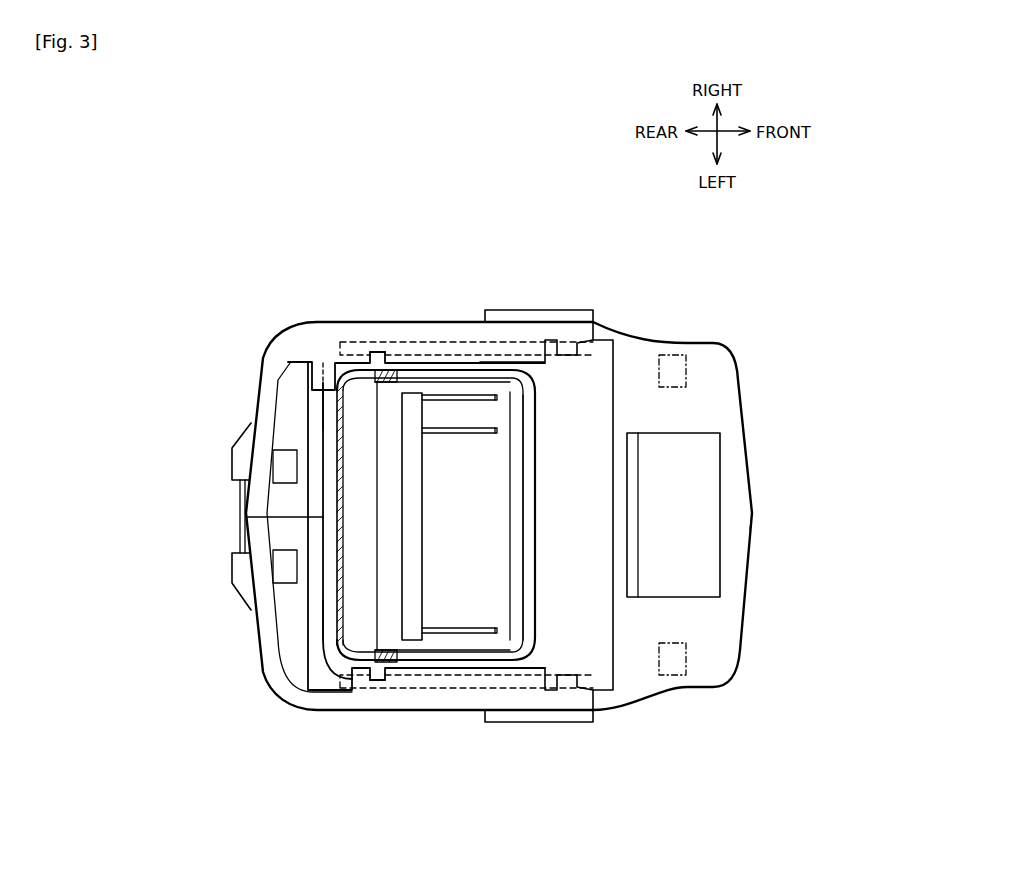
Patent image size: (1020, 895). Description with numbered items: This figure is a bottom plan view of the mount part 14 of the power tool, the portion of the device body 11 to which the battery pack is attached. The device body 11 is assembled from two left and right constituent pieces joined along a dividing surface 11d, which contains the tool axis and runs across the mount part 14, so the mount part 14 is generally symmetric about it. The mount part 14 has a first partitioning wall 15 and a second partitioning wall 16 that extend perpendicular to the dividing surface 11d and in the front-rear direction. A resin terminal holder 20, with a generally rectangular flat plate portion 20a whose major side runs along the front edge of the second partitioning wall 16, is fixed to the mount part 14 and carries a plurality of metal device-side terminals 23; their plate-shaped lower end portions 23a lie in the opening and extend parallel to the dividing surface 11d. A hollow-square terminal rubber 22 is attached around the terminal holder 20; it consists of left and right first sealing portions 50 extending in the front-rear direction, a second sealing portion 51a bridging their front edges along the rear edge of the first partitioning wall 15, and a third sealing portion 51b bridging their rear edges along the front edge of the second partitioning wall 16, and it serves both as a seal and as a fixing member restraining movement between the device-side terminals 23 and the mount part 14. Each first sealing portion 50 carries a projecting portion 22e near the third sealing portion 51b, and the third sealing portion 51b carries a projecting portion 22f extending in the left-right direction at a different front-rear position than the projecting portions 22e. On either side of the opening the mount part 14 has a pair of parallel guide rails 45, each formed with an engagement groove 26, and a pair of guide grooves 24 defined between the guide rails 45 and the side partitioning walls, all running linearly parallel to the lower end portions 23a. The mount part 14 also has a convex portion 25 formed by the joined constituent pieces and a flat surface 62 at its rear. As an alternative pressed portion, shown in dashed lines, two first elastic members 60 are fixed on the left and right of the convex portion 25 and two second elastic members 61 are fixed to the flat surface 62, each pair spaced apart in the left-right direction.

The device body 11 is at (311, 252).
The dividing surface 11d is at (743, 512).
The mount part 14 is at (278, 334).
The first partitioning wall 15 is at (608, 340).
The second partitioning wall 16 is at (323, 628).
The terminal holder 20 is at (472, 573).
The flat plate portion 20a is at (472, 540).
The terminal rubber 22 is at (320, 672).
The projecting portion 22e is at (361, 347).
The projecting portion 22f is at (336, 398).
The device-side terminal 23 is at (468, 385).
The lower end portion 23a is at (490, 397).
The guide groove 24 is at (403, 345).
The convex portion 25 is at (690, 483).
The engagement groove 26 is at (560, 343).
The guide rail 45 is at (523, 345).
The first sealing portion 50 is at (426, 366).
The second sealing portion 51a is at (530, 456).
The third sealing portion 51b is at (330, 430).
The first elastic member 60 is at (685, 350).
The second elastic member 61 is at (262, 452).
The flat surface 62 is at (267, 497).